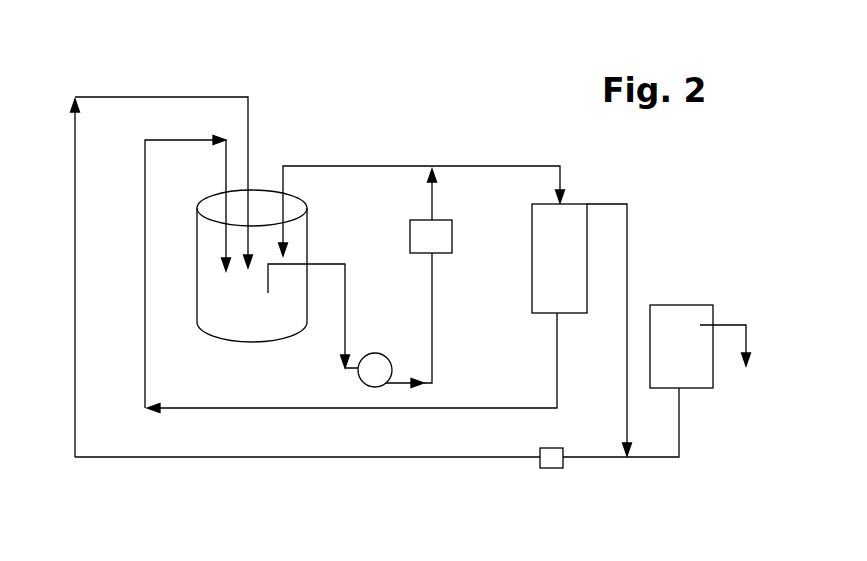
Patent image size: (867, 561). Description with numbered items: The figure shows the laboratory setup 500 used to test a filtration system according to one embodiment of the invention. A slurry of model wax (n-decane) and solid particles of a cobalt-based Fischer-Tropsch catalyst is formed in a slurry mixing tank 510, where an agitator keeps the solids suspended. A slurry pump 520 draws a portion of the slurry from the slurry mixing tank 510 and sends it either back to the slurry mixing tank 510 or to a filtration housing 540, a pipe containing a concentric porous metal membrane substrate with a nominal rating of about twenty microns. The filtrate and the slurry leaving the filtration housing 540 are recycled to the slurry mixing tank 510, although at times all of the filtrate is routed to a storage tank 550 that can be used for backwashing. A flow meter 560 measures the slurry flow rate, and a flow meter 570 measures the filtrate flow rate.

The laboratory setup 500 is at (384, 116).
The slurry mixing tank 510 is at (257, 313).
The slurry pump 520 is at (358, 342).
The filtration housing 540 is at (582, 262).
The storage tank 550 is at (705, 374).
The flow meter 560 is at (401, 228).
The flow meter 570 is at (557, 480).